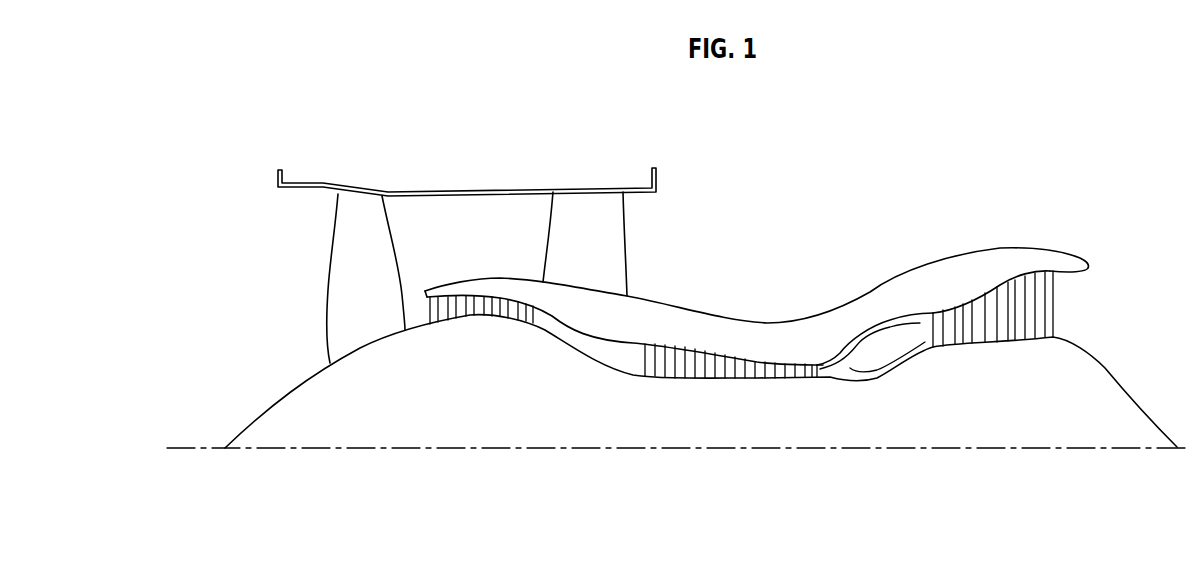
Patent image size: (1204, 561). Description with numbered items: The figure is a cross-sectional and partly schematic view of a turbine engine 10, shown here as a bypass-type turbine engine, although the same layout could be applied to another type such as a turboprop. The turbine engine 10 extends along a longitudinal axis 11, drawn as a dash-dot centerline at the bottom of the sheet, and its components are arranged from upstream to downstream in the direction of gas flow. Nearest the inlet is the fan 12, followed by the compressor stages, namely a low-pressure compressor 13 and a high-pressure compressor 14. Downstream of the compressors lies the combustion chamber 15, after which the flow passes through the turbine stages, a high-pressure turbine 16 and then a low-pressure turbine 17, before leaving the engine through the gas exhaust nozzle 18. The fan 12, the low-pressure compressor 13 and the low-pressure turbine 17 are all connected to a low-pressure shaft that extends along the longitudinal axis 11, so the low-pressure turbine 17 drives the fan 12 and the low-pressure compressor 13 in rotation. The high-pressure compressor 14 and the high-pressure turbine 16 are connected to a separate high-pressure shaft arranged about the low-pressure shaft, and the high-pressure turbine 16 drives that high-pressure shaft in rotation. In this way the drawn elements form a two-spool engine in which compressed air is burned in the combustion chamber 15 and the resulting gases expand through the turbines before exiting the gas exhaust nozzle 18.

The turbine engine 10 is at (818, 144).
The longitudinal axis 11 is at (182, 447).
The fan 12 is at (358, 275).
The low-pressure compressor 13 is at (475, 270).
The high-pressure compressor 14 is at (727, 343).
The combustion chamber 15 is at (883, 348).
The high-pressure turbine 16 is at (981, 278).
The low-pressure turbine 17 is at (1016, 233).
The gas exhaust nozzle 18 is at (1090, 267).